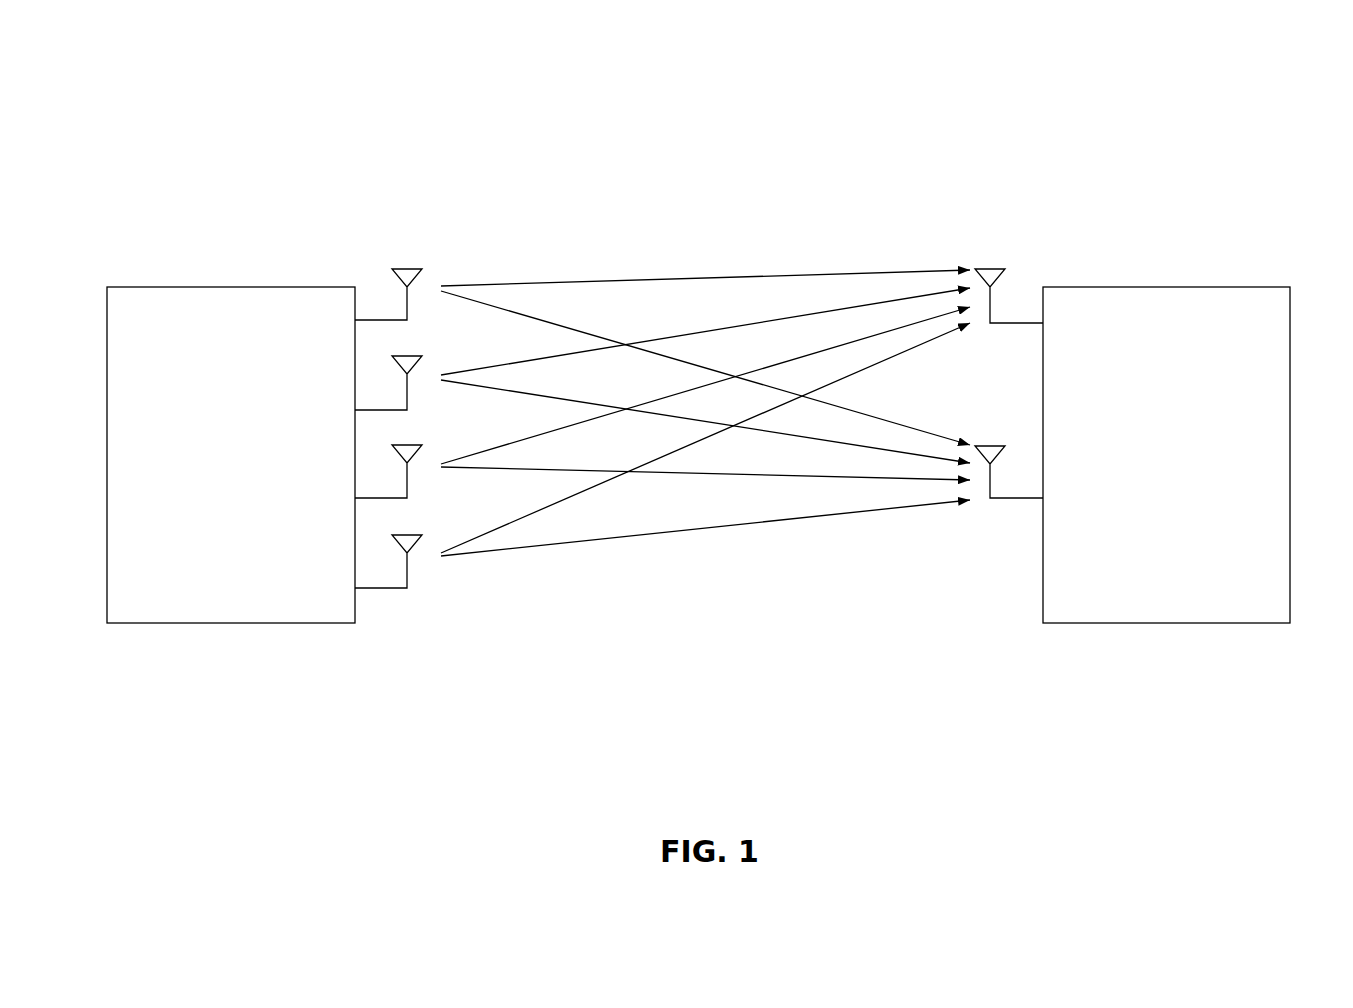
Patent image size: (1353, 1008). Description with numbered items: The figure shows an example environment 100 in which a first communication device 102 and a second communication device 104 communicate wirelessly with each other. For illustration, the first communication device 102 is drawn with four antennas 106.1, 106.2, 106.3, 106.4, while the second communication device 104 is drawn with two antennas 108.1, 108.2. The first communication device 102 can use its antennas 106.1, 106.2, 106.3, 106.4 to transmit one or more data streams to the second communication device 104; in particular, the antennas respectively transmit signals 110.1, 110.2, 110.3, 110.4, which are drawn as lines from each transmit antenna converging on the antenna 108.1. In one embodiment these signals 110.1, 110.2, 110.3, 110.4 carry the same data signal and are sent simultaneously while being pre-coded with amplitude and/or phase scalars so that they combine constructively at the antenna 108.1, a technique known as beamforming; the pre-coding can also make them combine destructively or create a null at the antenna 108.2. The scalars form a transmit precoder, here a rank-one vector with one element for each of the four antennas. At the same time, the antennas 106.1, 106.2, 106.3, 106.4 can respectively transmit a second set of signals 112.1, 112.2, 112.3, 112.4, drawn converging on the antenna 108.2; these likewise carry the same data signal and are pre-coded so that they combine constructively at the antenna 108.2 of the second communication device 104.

The example environment 100 is at (1343, 66).
The first communication device 102 is at (153, 613).
The second communication device 104 is at (1090, 611).
The antenna 106.1 is at (407, 269).
The antenna 106.2 is at (407, 356).
The antenna 106.3 is at (407, 445).
The antenna 106.4 is at (407, 535).
The antenna 108.1 is at (990, 269).
The antenna 108.2 is at (990, 446).
The signal 110.1 is at (582, 282).
The signal 110.2 is at (655, 338).
The signal 110.3 is at (735, 375).
The signal 110.4 is at (900, 355).
The signal 112.1 is at (636, 350).
The signal 112.2 is at (655, 414).
The signal 112.3 is at (690, 475).
The signal 112.4 is at (710, 528).